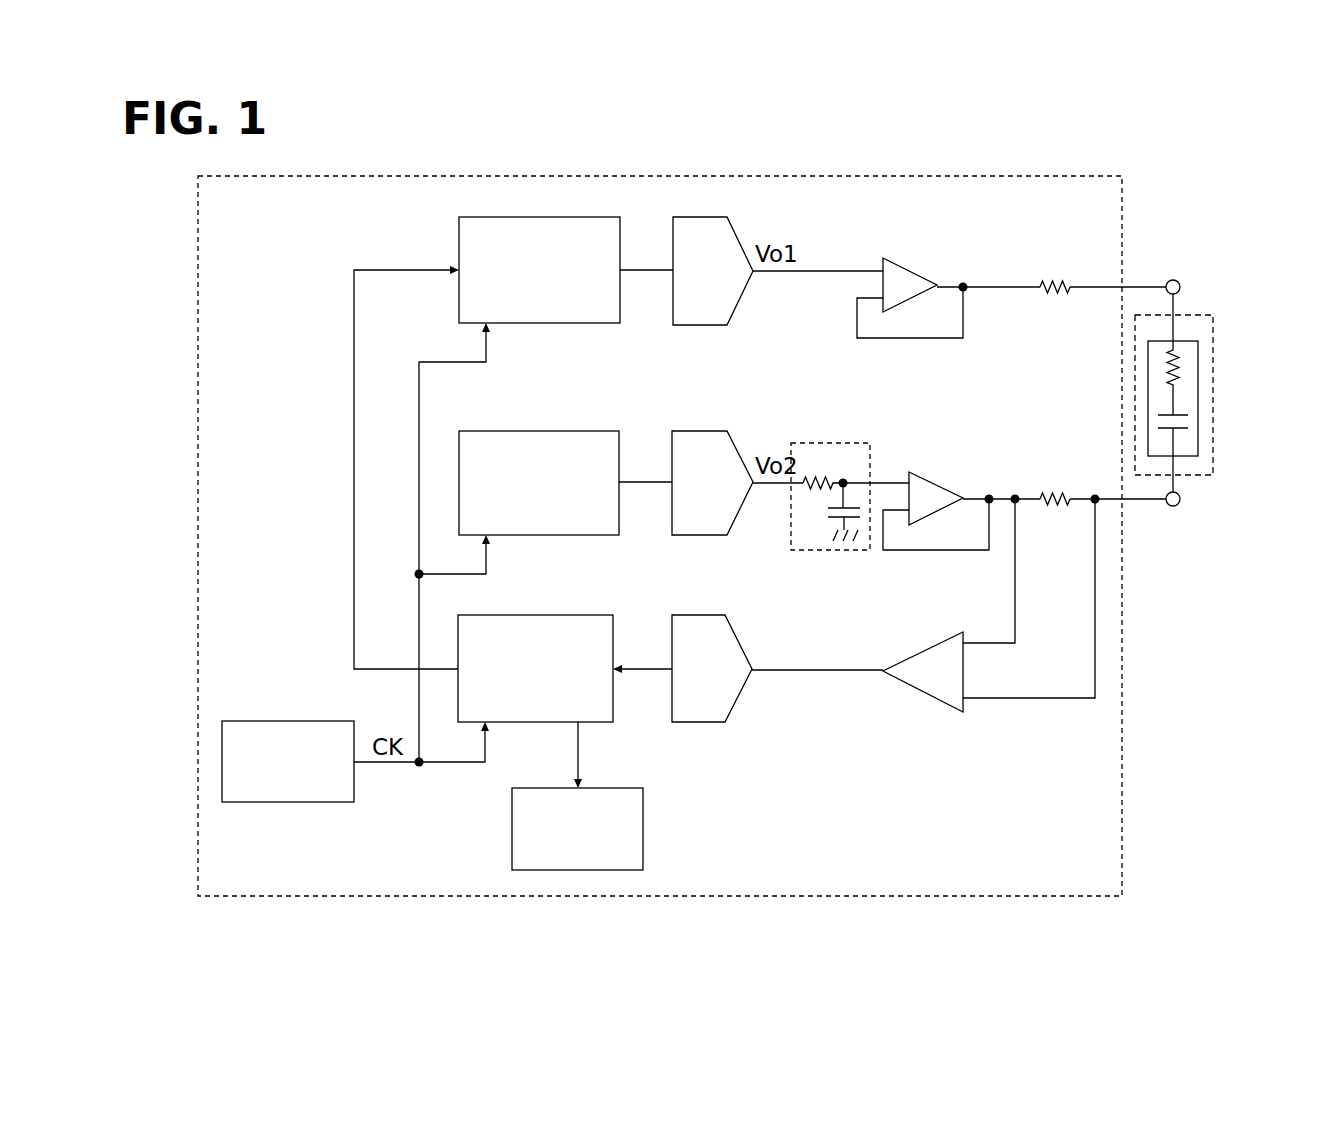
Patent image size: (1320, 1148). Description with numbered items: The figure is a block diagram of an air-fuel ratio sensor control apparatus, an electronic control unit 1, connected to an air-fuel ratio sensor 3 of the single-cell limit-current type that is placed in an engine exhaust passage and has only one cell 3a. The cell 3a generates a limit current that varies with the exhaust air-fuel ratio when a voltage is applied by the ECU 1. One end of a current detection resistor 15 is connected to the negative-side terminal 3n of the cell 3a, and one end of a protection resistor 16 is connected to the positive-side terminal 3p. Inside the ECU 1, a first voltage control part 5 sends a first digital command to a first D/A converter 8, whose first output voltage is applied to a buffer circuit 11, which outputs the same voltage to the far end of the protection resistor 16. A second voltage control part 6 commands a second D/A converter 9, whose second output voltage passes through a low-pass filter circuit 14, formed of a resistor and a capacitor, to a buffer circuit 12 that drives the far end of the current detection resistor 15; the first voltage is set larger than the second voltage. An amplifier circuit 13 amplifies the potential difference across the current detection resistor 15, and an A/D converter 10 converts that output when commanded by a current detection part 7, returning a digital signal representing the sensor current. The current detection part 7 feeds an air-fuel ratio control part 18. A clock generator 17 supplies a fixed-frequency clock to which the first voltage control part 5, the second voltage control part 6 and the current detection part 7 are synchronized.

The electronic control unit 1 is at (990, 176).
The air-fuel ratio sensor 3 is at (1215, 355).
The cell 3a is at (1198, 404).
The positive-side terminal 3p is at (1180, 287).
The negative-side terminal 3n is at (1180, 499).
The first voltage control part 5 is at (592, 217).
The second voltage control part 6 is at (592, 431).
The current detection part 7 is at (588, 615).
The first D/A converter 8 is at (697, 217).
The second D/A converter 9 is at (697, 431).
The A/D converter 10 is at (697, 615).
The buffer circuit 11 is at (897, 264).
The buffer circuit 12 is at (922, 477).
The amplifier circuit 13 is at (942, 637).
The filter circuit 14 is at (845, 443).
The current detection resistor 15 is at (1046, 490).
The protection resistor 16 is at (1050, 278).
The clock generator 17 is at (300, 721).
The air-fuel ratio control part 18 is at (618, 788).